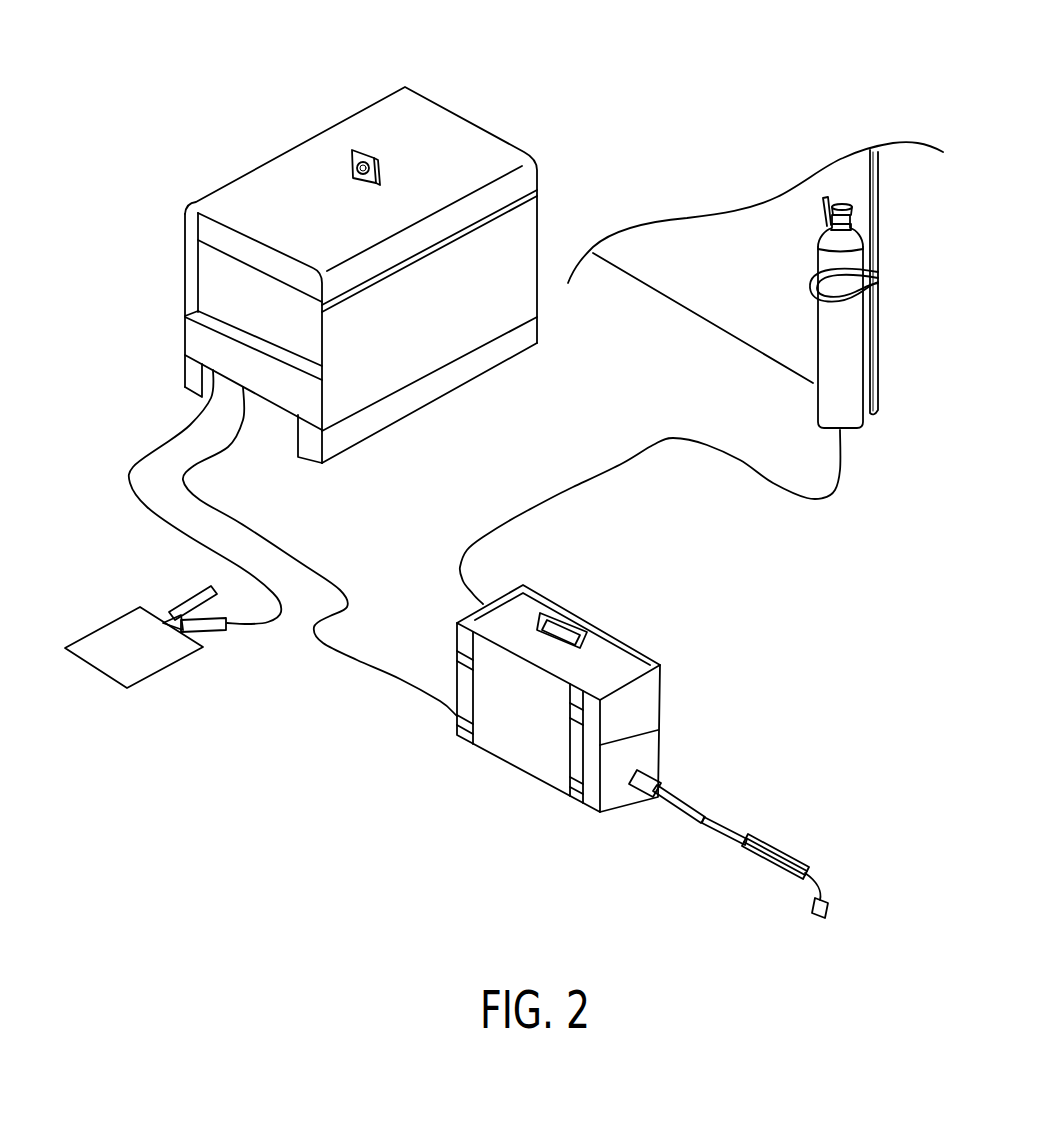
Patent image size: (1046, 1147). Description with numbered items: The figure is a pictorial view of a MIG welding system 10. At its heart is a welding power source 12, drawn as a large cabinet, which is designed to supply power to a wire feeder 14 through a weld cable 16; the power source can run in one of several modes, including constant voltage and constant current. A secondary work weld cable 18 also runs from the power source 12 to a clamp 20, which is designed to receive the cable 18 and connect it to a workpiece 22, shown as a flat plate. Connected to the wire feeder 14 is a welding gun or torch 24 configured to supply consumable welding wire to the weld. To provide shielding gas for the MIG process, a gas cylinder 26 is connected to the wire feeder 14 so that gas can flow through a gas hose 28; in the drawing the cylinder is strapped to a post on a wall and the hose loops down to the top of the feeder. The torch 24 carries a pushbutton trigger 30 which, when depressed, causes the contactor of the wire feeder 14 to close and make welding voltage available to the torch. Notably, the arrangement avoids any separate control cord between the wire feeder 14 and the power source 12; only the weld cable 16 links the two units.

The MIG welding system 10 is at (630, 99).
The welding power source 12 is at (292, 146).
The wire feeder 14 is at (527, 776).
The weld cable 16 is at (187, 470).
The secondary work weld cable 18 is at (163, 446).
The clamp 20 is at (212, 628).
The workpiece 22 is at (92, 668).
The welding gun or torch 24 is at (788, 839).
The gas cylinder 26 is at (826, 274).
The gas hose 28 is at (824, 500).
The pushbutton trigger 30 is at (773, 870).